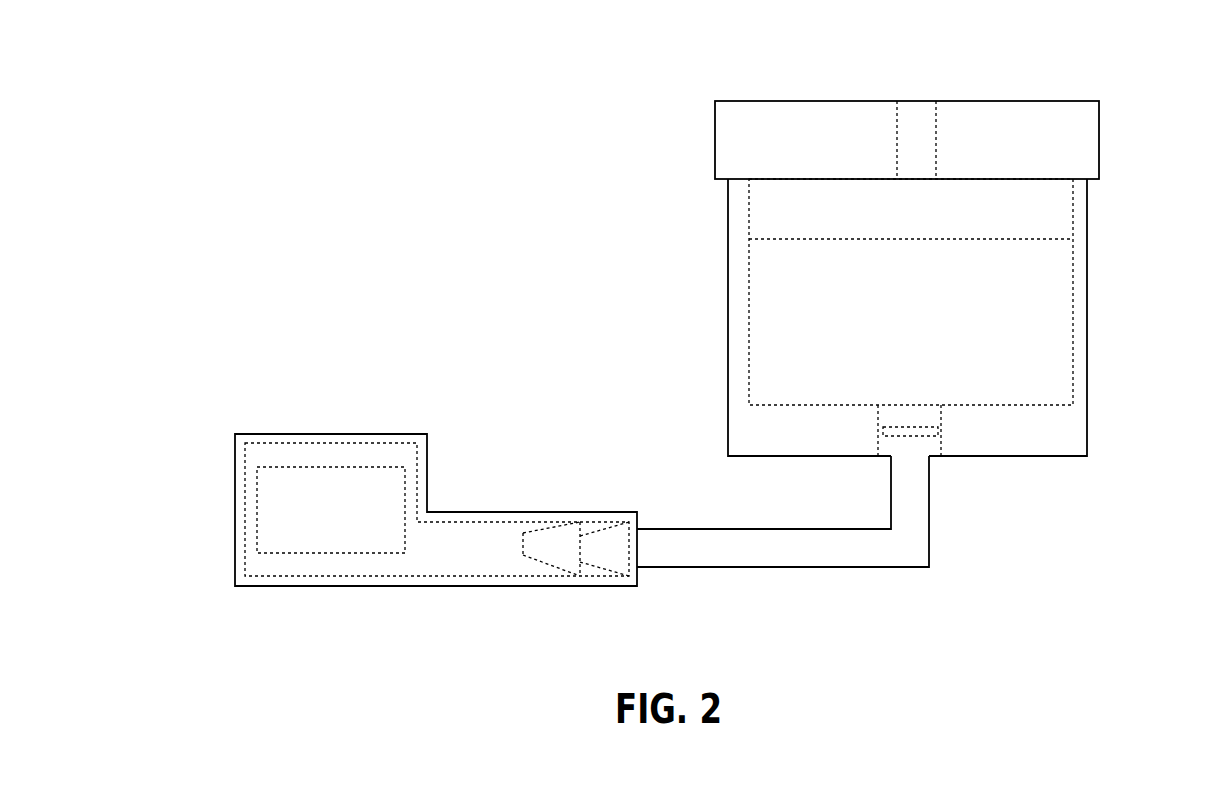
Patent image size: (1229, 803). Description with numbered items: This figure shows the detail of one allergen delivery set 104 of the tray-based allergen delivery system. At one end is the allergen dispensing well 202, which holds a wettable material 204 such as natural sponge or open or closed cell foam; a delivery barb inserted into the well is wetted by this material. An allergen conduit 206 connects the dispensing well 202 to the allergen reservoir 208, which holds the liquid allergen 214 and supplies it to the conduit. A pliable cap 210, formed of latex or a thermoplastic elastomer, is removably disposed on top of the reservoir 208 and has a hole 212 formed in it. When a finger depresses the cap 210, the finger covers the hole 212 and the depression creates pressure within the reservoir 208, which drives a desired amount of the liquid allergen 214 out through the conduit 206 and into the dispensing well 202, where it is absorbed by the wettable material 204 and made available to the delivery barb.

The allergen delivery set 104 is at (447, 197).
The allergen dispensing well 202 is at (272, 586).
The wettable material 204 is at (268, 482).
The allergen conduit 206 is at (910, 568).
The allergen reservoir 208 is at (1087, 265).
The pliable cap 210 is at (768, 118).
The fill opening 212 is at (918, 115).
The liquid allergen 214 is at (768, 333).